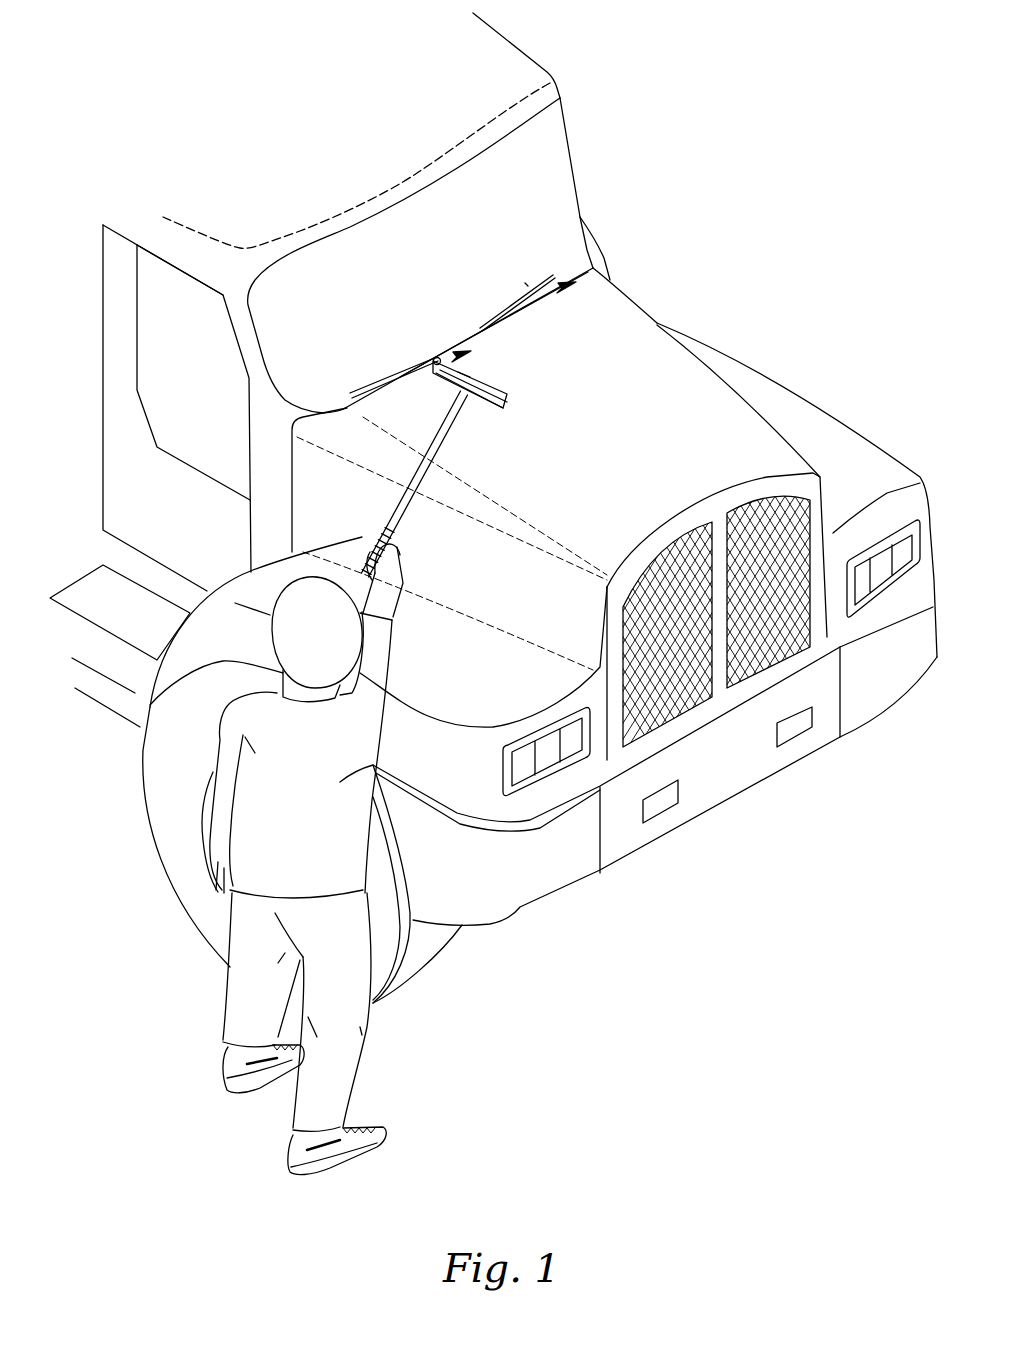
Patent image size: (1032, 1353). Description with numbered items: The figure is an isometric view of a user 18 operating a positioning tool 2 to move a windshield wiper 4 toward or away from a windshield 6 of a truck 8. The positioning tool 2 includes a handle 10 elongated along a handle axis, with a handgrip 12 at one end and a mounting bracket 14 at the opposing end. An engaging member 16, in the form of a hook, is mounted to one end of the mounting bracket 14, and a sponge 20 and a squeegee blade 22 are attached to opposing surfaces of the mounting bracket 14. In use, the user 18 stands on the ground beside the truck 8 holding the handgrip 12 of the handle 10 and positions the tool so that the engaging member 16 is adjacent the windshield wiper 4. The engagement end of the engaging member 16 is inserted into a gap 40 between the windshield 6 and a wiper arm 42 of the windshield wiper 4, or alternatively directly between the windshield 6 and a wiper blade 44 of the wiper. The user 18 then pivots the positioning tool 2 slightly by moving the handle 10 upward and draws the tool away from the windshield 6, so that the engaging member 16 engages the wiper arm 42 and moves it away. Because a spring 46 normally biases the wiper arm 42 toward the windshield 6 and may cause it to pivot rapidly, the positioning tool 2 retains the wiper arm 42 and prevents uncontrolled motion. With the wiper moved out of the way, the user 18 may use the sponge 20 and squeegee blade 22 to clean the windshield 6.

The positioning tool 2 is at (453, 442).
The windshield wiper 4 is at (525, 283).
The windshield 6 is at (560, 180).
The truck 8 is at (622, 126).
The handle 10 is at (413, 500).
The handgrip 12 is at (370, 553).
The mounting bracket 14 is at (510, 405).
The engaging member 16 is at (436, 355).
The user 18 is at (380, 738).
The sponge 20 is at (505, 402).
The squeegee blade 22 is at (502, 384).
The gap 40 is at (450, 352).
The wiper arm 42 is at (479, 350).
The wiper blade 44 is at (357, 391).
The spring 46 is at (478, 367).